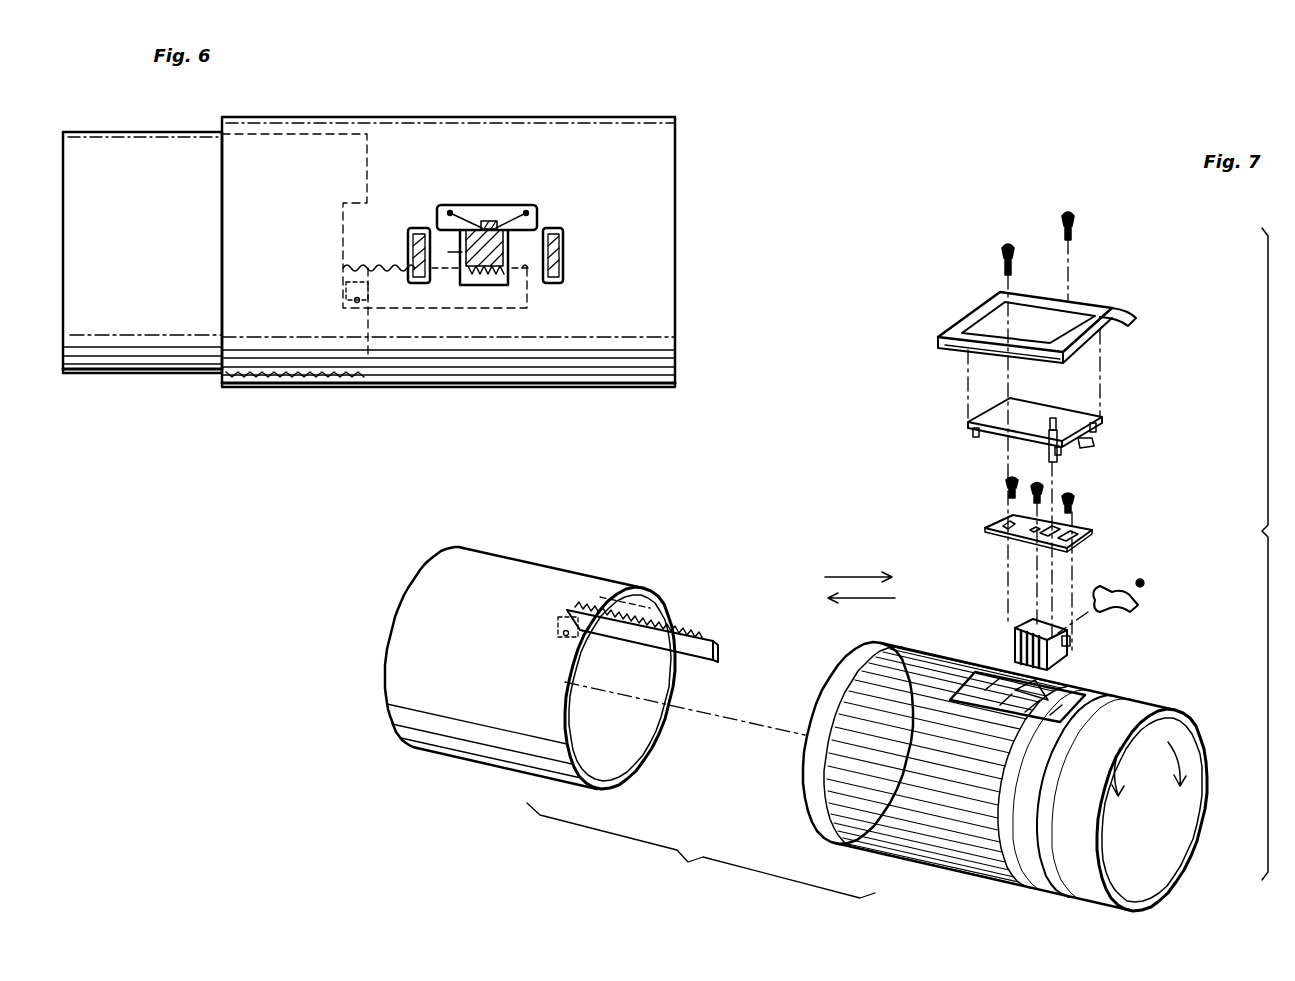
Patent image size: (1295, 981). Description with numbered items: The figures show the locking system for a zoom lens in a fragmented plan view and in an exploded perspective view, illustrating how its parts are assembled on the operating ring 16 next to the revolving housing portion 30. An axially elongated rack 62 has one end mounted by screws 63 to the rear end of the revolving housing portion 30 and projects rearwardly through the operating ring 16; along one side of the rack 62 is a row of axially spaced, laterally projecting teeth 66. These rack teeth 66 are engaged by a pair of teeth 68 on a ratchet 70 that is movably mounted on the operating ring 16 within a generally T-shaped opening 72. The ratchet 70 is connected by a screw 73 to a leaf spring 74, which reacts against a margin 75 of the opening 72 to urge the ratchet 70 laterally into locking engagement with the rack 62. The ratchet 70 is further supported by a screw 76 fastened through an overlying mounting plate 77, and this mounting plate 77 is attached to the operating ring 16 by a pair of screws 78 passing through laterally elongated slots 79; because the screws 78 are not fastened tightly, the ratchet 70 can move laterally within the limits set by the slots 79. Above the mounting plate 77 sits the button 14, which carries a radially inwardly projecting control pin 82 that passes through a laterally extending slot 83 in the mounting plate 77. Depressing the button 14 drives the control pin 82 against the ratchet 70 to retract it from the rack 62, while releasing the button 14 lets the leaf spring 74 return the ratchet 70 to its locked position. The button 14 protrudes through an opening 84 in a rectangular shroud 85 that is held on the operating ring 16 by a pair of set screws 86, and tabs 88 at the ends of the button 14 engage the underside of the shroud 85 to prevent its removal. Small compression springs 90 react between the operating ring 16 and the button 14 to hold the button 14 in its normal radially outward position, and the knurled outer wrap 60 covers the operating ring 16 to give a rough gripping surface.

In FIG. 7, the button 14 is at (1035, 410).
In FIG. 6, the operating ring 16 is at (612, 134).
In FIG. 7, the operating ring 16 is at (1148, 718).
In FIG. 6, the revolving housing portion 30 is at (121, 143).
In FIG. 7, the revolving housing portion 30 is at (500, 745).
In FIG. 7, the outer wrap 60 is at (985, 858).
In FIG. 6, the rack 62 is at (408, 300).
In FIG. 7, the rack 62 is at (661, 636).
In FIG. 7, the screws 63 is at (565, 630).
In FIG. 7, the teeth 66 is at (672, 626).
In FIG. 7, the teeth 68 is at (1013, 650).
In FIG. 6, the ratchet 70 is at (524, 250).
In FIG. 7, the ratchet 70 is at (1030, 622).
In FIG. 7, the T-shaped opening 72 is at (1050, 690).
In FIG. 7, the screw 73 is at (1144, 584).
In FIG. 6, the leaf spring 74 is at (500, 210).
In FIG. 7, the leaf spring 74 is at (1115, 610).
In FIG. 6, the margin 75 is at (480, 205).
In FIG. 7, the margin 75 is at (1095, 692).
In FIG. 7, the screw 76 is at (1045, 492).
In FIG. 7, the mounting plate 77 is at (1037, 531).
In FIG. 6, the screws 78 is at (445, 252).
In FIG. 7, the screws 78 is at (1006, 488).
In FIG. 7, the slots 79 is at (1005, 526).
In FIG. 7, the control pin 82 is at (1048, 448).
In FIG. 7, the slot 83 is at (1020, 540).
In FIG. 7, the opening 84 is at (985, 318).
In FIG. 7, the shroud 85 is at (1110, 314).
In FIG. 7, the set screws 86 is at (1076, 226).
In FIG. 6, the tabs 88 is at (563, 268).
In FIG. 7, the tabs 88 is at (1085, 443).
In FIG. 7, the compression springs 90 is at (972, 437).